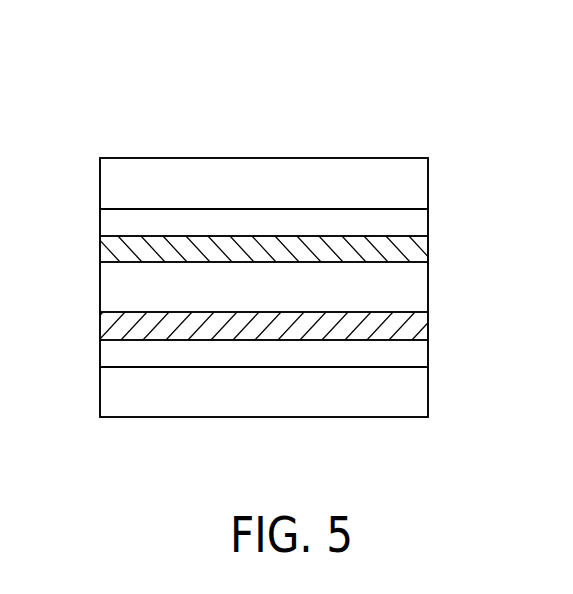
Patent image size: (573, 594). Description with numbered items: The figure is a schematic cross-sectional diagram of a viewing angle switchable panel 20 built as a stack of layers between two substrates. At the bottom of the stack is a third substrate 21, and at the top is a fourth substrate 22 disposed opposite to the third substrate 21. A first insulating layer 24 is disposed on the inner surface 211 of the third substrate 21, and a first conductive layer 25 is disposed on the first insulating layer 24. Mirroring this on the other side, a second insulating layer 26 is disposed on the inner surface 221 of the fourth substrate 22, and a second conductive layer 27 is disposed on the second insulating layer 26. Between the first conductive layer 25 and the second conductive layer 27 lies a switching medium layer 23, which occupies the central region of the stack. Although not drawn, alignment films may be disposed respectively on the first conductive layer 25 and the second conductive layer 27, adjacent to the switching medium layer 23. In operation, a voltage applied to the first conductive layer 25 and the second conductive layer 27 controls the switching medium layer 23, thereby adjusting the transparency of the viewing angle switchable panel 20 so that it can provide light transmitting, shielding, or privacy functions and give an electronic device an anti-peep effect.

The viewing angle switchable panel 20 is at (104, 88).
The third substrate 21 is at (428, 385).
The inner surface of the third substrate 211 is at (428, 367).
The fourth substrate 22 is at (428, 182).
The inner surface of the fourth substrate 221 is at (428, 209).
The switching medium layer 23 is at (428, 287).
The first insulating layer 24 is at (100, 353).
The first conductive layer 25 is at (100, 325).
The second insulating layer 26 is at (100, 222).
The second conductive layer 27 is at (100, 252).